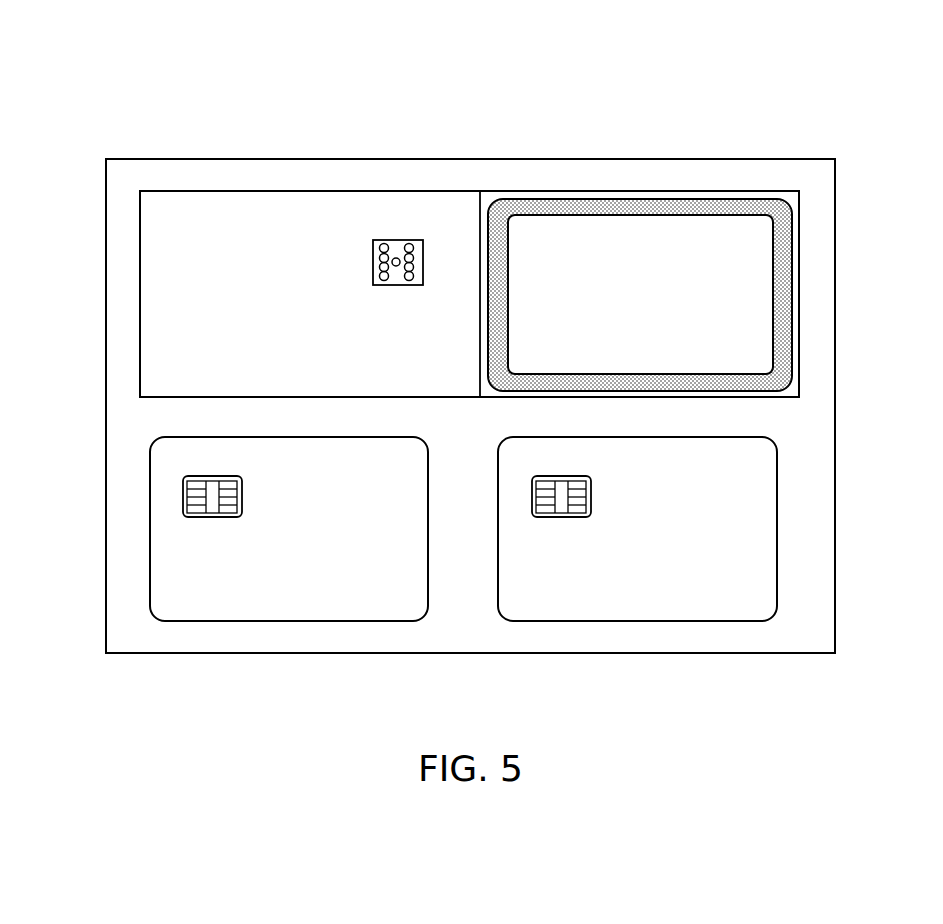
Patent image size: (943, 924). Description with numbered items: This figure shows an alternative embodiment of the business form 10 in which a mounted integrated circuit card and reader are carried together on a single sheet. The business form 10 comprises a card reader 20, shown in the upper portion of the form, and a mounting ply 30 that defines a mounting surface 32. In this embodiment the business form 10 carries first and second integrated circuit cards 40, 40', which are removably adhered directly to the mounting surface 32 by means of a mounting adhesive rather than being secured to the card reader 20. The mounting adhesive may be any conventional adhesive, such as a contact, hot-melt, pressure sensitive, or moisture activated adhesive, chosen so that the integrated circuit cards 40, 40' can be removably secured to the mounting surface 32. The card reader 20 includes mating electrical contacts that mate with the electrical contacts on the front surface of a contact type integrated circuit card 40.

The business form 10 is at (117, 95).
The card reader 20 is at (140, 318).
The mounting ply 30 is at (835, 418).
The mounting surface 32 is at (818, 638).
The integrated circuit card 40 is at (289, 565).
The second integrated circuit card 40' is at (637, 566).